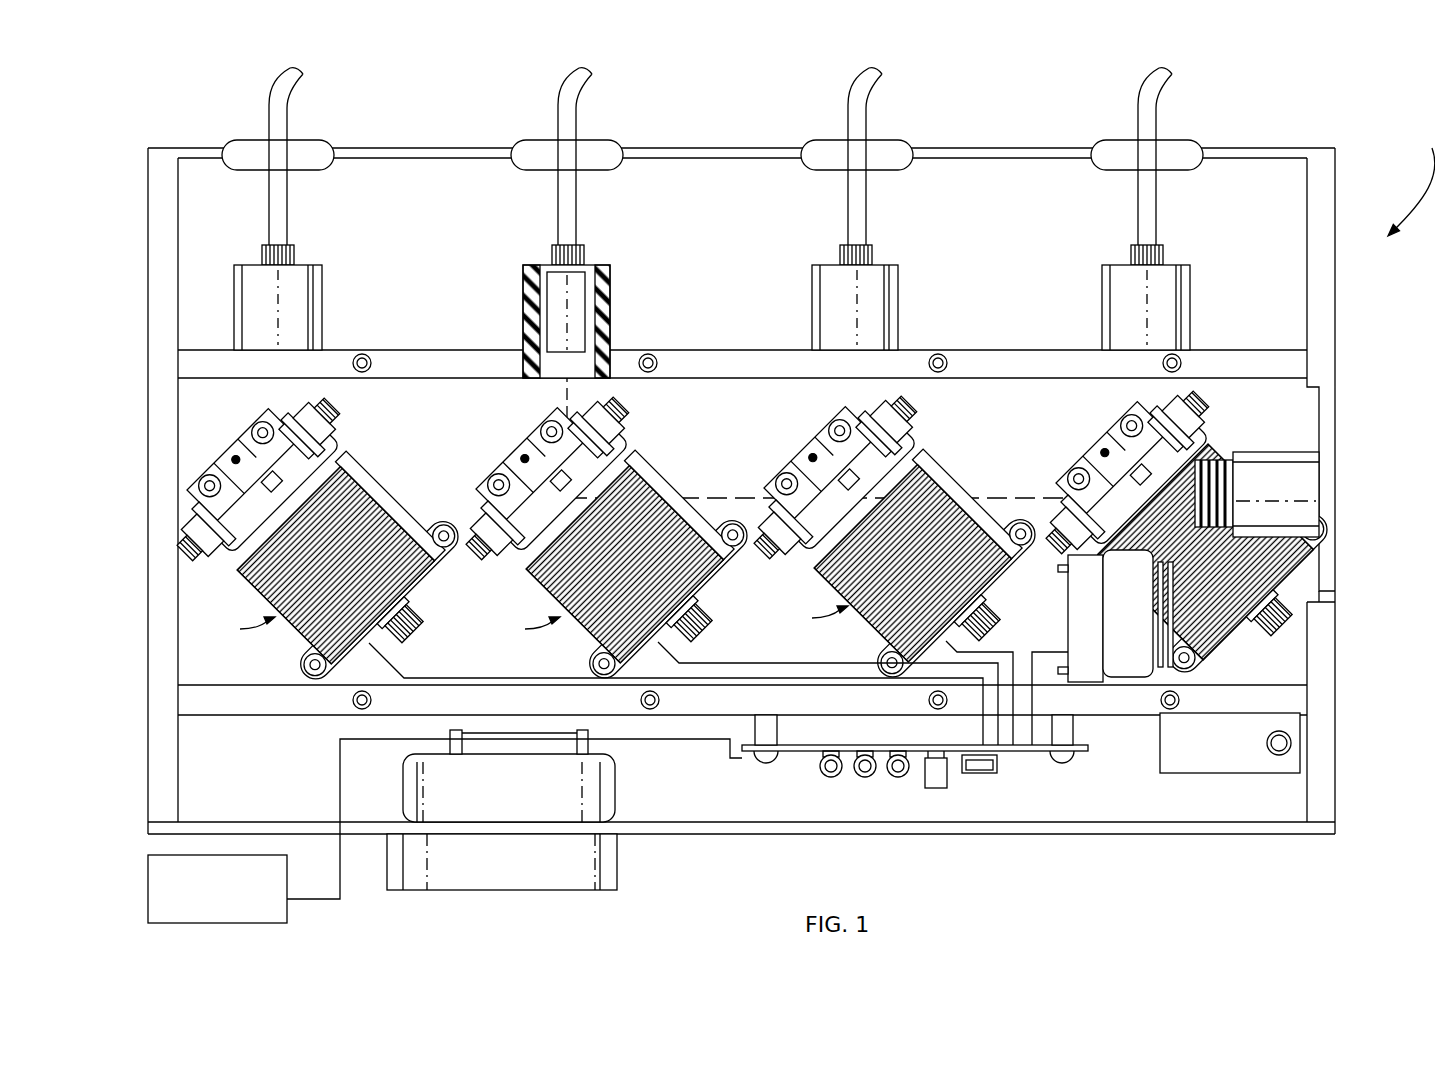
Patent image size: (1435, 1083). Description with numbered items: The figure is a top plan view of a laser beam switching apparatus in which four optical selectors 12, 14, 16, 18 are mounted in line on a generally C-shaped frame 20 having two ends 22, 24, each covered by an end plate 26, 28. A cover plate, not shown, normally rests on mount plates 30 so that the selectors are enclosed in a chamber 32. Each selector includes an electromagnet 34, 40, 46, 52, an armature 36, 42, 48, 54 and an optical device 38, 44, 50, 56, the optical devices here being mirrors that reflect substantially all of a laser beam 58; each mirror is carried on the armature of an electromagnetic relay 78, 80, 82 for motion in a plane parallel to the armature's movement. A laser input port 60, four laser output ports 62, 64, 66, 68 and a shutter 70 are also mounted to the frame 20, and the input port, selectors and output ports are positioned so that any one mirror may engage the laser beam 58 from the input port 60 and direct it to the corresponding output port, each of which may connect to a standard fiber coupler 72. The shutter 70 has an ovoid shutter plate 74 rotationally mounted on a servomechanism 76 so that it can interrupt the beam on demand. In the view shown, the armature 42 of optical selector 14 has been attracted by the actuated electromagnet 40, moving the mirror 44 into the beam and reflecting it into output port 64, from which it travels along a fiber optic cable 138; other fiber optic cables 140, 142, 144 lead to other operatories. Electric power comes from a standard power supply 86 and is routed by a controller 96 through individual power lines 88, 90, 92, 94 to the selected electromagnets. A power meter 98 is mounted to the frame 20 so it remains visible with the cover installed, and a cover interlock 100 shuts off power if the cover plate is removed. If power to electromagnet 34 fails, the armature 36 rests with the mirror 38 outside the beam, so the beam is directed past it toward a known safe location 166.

The optical selector 12 is at (271, 549).
The optical selector 14 is at (609, 548).
The optical selector 16 is at (897, 547).
The optical selector 18 is at (1193, 538).
The frame 20 is at (720, 838).
The end 22 is at (148, 832).
The end 24 is at (1337, 828).
The end plate 26 is at (148, 768).
The end plate 28 is at (1337, 768).
The mount plates 30 is at (1318, 296).
The chamber 32 is at (208, 404).
The electromagnet 34 is at (378, 582).
The armature 36 is at (333, 424).
The optical device 38 is at (340, 446).
The electromagnet 40 is at (668, 580).
The armature 42 is at (632, 432).
The optical device 44 is at (642, 458).
The electromagnet 46 is at (955, 580).
The armature 48 is at (917, 415).
The optical device 50 is at (922, 442).
The electromagnet 52 is at (1295, 625).
The armature 54 is at (1195, 408).
The optical device 56 is at (1216, 434).
The laser beam 58 is at (1068, 497).
The laser input port 60 is at (1290, 470).
The laser output port 62 is at (292, 308).
The laser output port 64 is at (611, 279).
The laser output port 66 is at (866, 308).
The laser output port 68 is at (1157, 303).
The shutter 70 is at (1160, 716).
The fiber coupler 72 is at (575, 308).
The shutter plate 74 is at (1200, 672).
The servomechanism 76 is at (1140, 629).
The electromagnetic relay 78 is at (243, 627).
The electromagnetic relay 80 is at (528, 627).
The electromagnetic relay 82 is at (815, 613).
The power supply 86 is at (227, 902).
The power line 88 is at (452, 678).
The power line 90 is at (746, 663).
The power line 92 is at (1000, 645).
The power line 94 is at (1040, 697).
The controller 96 is at (918, 755).
The power meter 98 is at (531, 805).
The cover interlock 100 is at (1235, 752).
The fiber optic cable 138 is at (574, 190).
The fiber optic cable 140 is at (286, 190).
The fiber optic cable 142 is at (864, 190).
The fiber optic cable 144 is at (1154, 190).
The safe location 166 is at (190, 514).